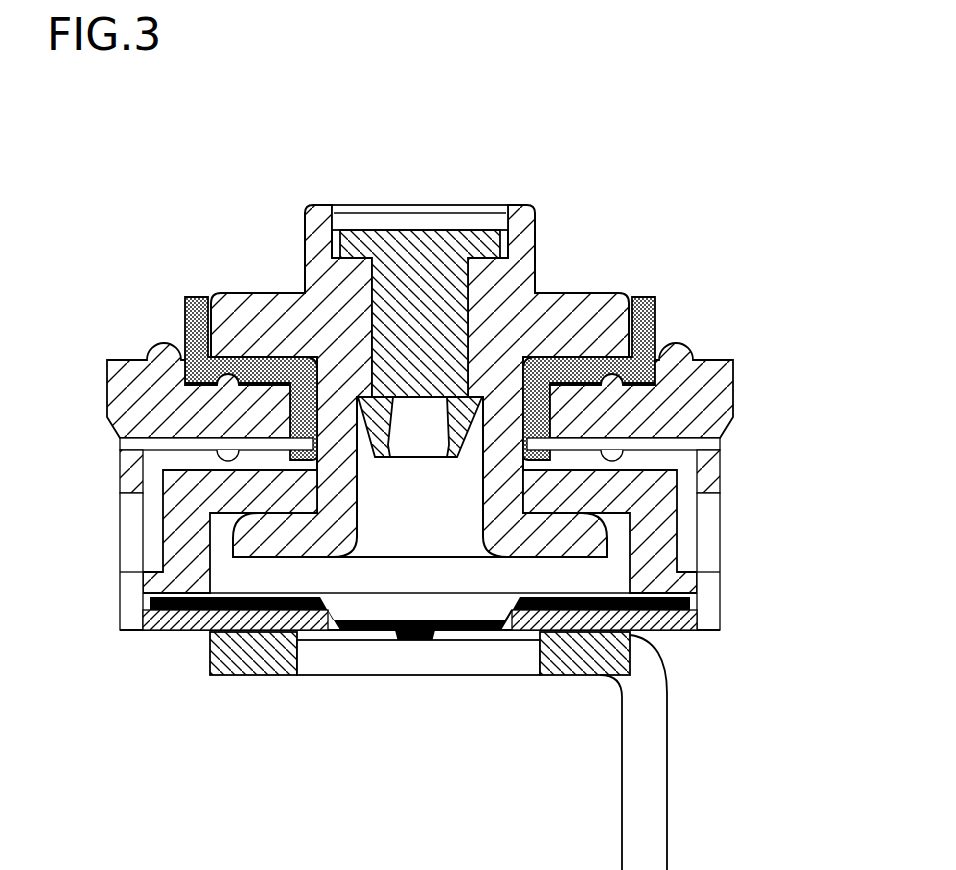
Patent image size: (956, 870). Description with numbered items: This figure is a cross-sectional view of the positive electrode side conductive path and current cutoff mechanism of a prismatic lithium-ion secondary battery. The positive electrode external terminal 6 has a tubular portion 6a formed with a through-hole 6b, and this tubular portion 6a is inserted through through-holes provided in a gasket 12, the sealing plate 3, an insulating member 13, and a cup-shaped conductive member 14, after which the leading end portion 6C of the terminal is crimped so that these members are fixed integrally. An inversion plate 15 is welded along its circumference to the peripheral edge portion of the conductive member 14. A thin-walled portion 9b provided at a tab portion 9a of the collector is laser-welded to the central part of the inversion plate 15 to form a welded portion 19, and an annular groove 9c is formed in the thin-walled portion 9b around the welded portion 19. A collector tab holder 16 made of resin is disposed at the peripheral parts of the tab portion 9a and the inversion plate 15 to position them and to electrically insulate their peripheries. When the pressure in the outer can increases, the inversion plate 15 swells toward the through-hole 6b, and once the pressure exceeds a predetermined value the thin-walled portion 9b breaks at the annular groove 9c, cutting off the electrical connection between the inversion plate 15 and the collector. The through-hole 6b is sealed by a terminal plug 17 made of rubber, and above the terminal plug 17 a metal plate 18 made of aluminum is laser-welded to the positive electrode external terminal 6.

The sealing plate 3 is at (720, 373).
The positive electrode external terminal 6 is at (585, 297).
The tubular portion 6a is at (347, 469).
The through-hole 6b is at (387, 468).
The leading end portion 6C is at (310, 547).
The tab portion 9a is at (562, 650).
The thin-walled portion 9b is at (377, 632).
The annular groove 9c is at (507, 640).
The gasket 12 is at (641, 318).
The insulating member 13 is at (683, 455).
The conductive member 14 is at (677, 593).
The inversion plate 15 is at (251, 632).
The collector tab holder 16 is at (167, 630).
The terminal plug 17 is at (385, 297).
The metal plate 18 is at (345, 214).
The welded portion 19 is at (406, 641).